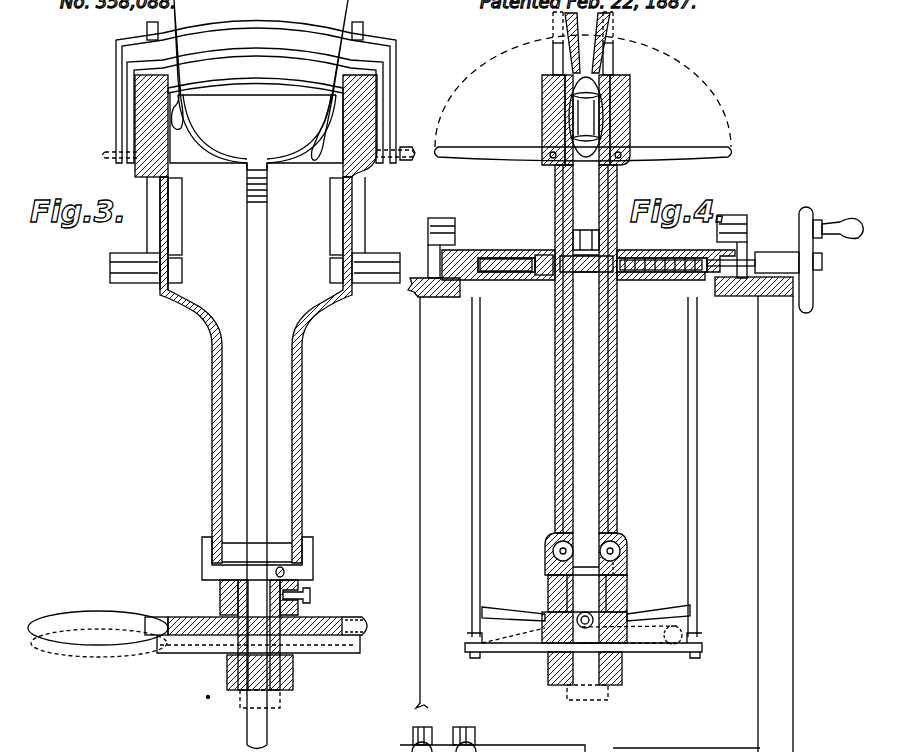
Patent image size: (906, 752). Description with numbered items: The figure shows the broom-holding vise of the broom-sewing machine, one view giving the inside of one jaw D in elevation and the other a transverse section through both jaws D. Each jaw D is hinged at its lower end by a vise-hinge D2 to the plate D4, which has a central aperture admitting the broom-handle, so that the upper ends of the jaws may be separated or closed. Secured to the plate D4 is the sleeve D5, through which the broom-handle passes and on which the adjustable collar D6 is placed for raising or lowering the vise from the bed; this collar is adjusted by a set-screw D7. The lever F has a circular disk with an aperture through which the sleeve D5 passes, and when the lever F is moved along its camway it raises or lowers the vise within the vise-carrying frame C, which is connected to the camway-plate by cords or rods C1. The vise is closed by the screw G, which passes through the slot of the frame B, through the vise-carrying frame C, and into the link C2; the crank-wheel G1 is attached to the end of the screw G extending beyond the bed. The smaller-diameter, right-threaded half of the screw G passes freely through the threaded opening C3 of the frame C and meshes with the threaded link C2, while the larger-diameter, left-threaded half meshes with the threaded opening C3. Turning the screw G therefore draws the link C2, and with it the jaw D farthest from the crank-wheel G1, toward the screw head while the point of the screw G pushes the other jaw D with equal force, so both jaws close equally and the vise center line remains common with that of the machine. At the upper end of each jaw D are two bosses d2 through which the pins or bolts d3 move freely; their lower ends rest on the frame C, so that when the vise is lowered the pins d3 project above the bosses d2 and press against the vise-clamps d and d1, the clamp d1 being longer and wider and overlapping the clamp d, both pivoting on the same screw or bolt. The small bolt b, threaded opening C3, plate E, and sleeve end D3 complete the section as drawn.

In FIG. 3, the pins or bolts d3 is at (256, 82).
In FIG. 3, the bosses d2 is at (330, 95).
In FIG. 3, the vise-clamp d1 is at (260, 80).
In FIG. 4, the vise-clamp d1 is at (583, 98).
In FIG. 3, the vise-clamp d is at (259, 126).
In FIG. 4, the vise-clamp d is at (587, 88).
In FIG. 3, the jaw of the vise D is at (256, 421).
In FIG. 4, the jaw of the vise D is at (590, 305).
In FIG. 3, the adjustable collar D6 is at (176, 216).
In FIG. 3, the sleeve D5 is at (335, 216).
In FIG. 4, the sleeve D5 is at (587, 637).
In FIG. 3, the flange / screw c is at (255, 258).
In FIG. 4, the flange / screw c is at (661, 276).
In FIG. 3, the bracket D3 is at (202, 559).
In FIG. 4, the bracket D3 is at (630, 536).
In FIG. 3, the plate D4 is at (286, 569).
In FIG. 4, the plate D4 is at (610, 569).
In FIG. 3, the set-screw D7 is at (312, 598).
In FIG. 3, the lever F is at (197, 628).
In FIG. 4, the lever F is at (586, 618).
In FIG. 4, the bolt b is at (460, 248).
In FIG. 4, the frame B is at (712, 244).
In FIG. 4, the vise-carrying frame C is at (588, 256).
In FIG. 4, the cords or rods C1 is at (596, 514).
In FIG. 4, the link C2 is at (544, 254).
In FIG. 4, the threaded opening C3 is at (506, 265).
In FIG. 4, the screw G is at (770, 262).
In FIG. 4, the crank-wheel G1 is at (821, 260).
In FIG. 4, the vise-hinges D2 is at (622, 551).
In FIG. 4, the base plate E is at (520, 655).